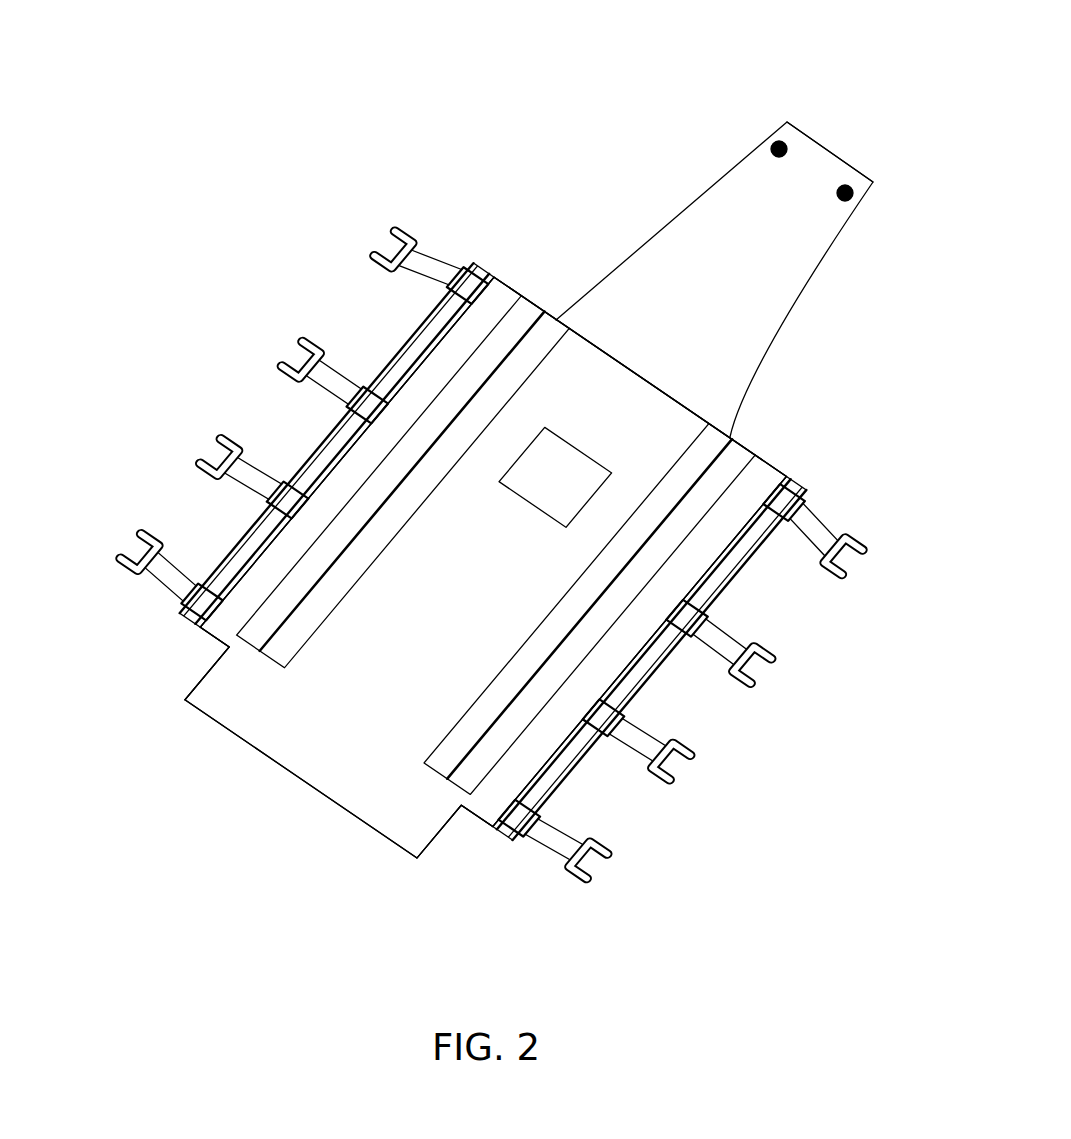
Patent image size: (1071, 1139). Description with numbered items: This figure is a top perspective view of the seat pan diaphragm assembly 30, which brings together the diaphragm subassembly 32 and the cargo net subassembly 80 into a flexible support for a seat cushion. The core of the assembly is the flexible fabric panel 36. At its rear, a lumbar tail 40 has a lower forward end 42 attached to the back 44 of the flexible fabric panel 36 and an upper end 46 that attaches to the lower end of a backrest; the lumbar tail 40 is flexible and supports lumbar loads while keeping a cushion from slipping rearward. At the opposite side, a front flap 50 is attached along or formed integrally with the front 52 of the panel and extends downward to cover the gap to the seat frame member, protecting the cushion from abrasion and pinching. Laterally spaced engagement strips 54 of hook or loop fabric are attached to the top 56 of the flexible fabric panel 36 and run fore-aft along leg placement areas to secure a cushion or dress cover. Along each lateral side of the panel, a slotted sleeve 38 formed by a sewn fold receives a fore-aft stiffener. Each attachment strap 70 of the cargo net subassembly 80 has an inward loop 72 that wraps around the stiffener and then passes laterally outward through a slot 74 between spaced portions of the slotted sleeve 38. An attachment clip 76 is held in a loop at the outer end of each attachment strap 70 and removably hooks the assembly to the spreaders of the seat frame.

The seat pan diaphragm assembly 30 is at (507, 168).
The diaphragm subassembly 32 is at (465, 838).
The flexible fabric panel 36 is at (324, 652).
The slotted sleeve 38 is at (330, 437).
The lumbar tail 40 is at (678, 245).
The lower forward end 42 is at (586, 339).
The back 44 is at (697, 412).
The upper end 46 is at (835, 148).
The front flap 50 is at (352, 788).
The front 52 is at (198, 644).
The engagement strips 54 is at (733, 458).
The top 56 is at (603, 433).
The attachment strap 70 is at (345, 388).
The loop 72 is at (776, 510).
The slot 74 is at (603, 750).
The attachment clip 76 is at (310, 352).
The cargo net subassembly 80 is at (534, 857).